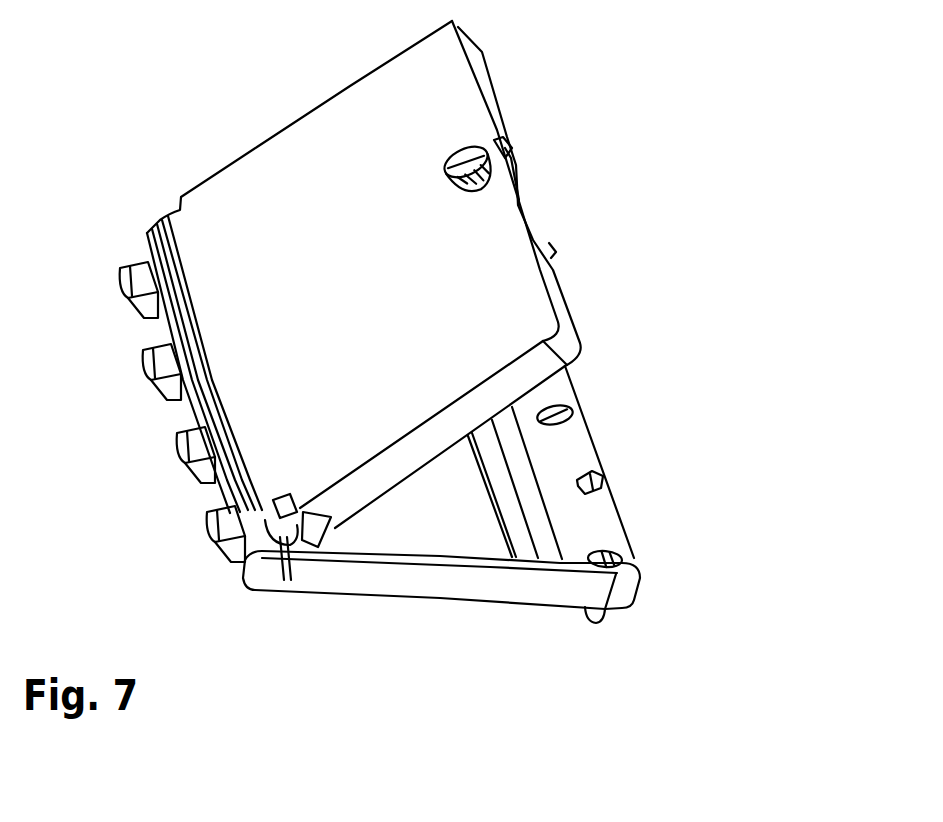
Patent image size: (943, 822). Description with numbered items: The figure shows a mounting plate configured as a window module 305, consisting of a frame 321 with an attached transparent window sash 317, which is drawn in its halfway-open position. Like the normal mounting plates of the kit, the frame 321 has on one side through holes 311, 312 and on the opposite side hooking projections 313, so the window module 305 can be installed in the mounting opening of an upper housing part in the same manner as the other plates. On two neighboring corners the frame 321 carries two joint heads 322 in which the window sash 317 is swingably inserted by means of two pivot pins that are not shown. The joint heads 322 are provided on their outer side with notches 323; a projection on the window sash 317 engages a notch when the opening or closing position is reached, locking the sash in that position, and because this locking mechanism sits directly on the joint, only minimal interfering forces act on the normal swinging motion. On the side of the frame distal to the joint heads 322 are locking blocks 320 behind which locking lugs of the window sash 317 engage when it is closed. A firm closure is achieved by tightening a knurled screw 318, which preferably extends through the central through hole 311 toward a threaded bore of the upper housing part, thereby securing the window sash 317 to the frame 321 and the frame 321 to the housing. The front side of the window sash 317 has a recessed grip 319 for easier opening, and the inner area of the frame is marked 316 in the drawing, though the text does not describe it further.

The window module 305 is at (720, 112).
The through hole 311 is at (570, 410).
The through hole 312 is at (633, 558).
The hooking projections 313 is at (120, 277).
The base top surface 316 is at (460, 525).
The window sash 317 is at (328, 133).
The knurled screw 318 is at (504, 142).
The recessed grip 319 is at (522, 185).
The locking blocks 320 is at (603, 472).
The frame 321 is at (621, 519).
The joint heads 322 is at (312, 540).
The notches 323 is at (283, 548).